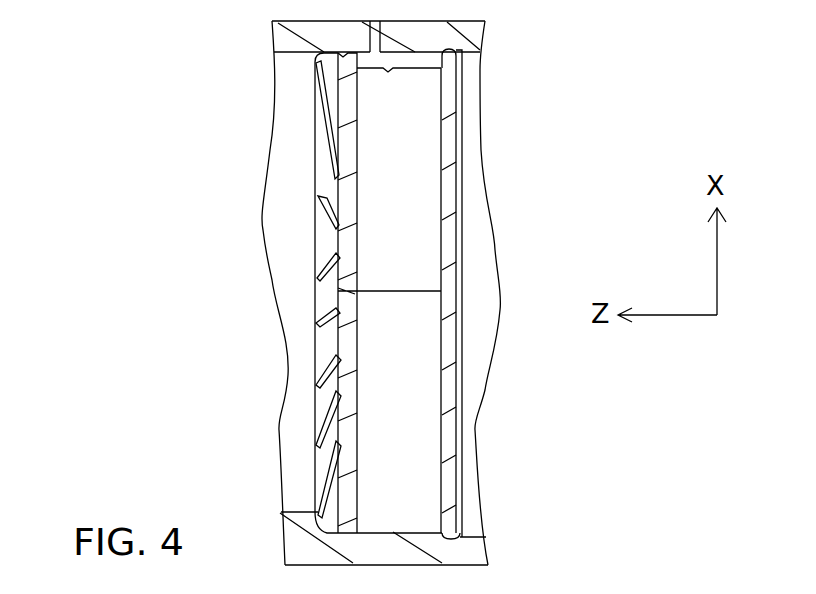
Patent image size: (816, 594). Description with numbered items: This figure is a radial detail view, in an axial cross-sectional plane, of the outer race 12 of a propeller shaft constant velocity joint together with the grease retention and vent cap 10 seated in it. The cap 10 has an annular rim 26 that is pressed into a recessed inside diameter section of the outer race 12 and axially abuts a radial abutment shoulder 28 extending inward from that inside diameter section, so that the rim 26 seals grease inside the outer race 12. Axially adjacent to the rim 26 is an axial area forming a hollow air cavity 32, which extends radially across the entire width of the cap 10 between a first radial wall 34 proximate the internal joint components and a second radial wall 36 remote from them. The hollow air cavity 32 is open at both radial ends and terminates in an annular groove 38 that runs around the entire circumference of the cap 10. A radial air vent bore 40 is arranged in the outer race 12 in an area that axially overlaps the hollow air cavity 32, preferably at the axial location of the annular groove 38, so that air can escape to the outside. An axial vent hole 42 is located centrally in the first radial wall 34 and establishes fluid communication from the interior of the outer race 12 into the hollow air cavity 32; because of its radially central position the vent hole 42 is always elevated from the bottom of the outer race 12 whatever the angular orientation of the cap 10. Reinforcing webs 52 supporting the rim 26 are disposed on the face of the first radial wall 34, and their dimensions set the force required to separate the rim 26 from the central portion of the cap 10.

The cap 10 is at (428, 243).
The outer race 12 is at (332, 38).
The annular rim 26 is at (327, 530).
The radial abutment shoulder 28 is at (316, 67).
The hollow air cavity 32 is at (397, 341).
The first radial wall 34 is at (340, 413).
The second radial wall 36 is at (448, 427).
The annular groove 38 is at (397, 532).
The radial air vent bore 40 is at (446, 50).
The axial vent hole 42 is at (348, 293).
The reinforcing webs 52 is at (318, 202).